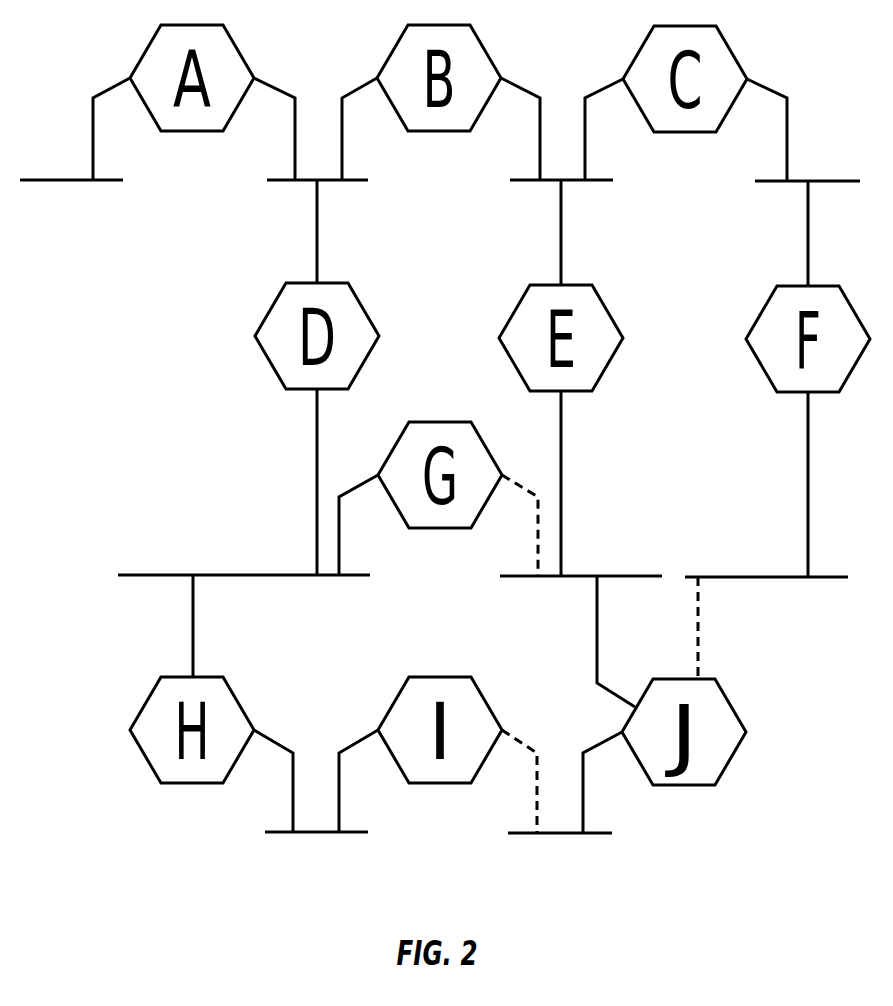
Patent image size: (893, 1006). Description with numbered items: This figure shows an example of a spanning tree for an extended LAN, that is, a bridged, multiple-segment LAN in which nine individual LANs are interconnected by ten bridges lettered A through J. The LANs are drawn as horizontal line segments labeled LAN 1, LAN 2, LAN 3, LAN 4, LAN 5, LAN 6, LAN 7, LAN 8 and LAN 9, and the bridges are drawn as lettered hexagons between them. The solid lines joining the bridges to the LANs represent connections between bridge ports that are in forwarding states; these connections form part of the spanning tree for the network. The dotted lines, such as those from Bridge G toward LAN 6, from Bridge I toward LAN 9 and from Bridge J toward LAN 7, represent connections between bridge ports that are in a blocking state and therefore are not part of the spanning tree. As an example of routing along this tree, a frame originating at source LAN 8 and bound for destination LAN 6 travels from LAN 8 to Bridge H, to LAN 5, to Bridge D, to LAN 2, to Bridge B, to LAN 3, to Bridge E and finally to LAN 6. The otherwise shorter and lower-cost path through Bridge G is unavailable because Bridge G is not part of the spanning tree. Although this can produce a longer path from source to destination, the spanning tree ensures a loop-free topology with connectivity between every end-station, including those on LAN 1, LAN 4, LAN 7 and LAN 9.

The LAN 1 is at (71, 159).
The LAN 2 is at (317, 159).
The LAN 3 is at (561, 159).
The LAN 4 is at (807, 159).
The LAN 5 is at (244, 550).
The LAN 6 is at (581, 550).
The LAN 7 is at (766, 551).
The LAN 8 is at (316, 813).
The LAN 9 is at (560, 813).